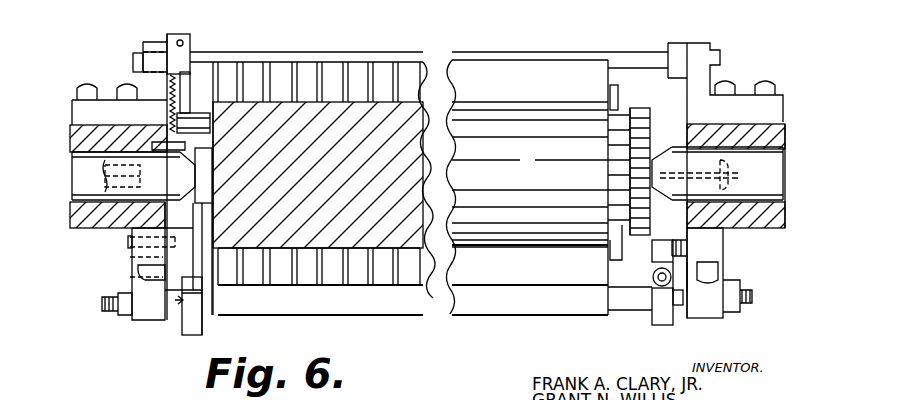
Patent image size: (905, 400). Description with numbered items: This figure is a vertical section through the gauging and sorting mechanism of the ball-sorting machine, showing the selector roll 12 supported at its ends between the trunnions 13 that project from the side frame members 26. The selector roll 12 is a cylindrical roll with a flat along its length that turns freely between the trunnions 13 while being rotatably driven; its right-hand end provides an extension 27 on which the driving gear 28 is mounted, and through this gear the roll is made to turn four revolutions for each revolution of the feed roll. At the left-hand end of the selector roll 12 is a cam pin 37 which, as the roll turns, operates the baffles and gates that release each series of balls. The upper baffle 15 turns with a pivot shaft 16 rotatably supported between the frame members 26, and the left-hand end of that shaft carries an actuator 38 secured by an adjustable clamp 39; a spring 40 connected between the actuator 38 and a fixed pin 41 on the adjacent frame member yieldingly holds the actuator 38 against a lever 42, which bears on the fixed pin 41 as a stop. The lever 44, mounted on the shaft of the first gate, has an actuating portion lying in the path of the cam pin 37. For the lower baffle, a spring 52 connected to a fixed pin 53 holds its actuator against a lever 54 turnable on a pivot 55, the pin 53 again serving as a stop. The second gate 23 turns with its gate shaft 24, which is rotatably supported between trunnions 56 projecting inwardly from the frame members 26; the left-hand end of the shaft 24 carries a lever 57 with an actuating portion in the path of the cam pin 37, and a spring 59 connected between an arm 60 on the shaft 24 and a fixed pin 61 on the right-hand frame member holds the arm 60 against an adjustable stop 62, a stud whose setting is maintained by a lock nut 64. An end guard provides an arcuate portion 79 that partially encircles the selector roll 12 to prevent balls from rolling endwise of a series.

The selector roll 12 is at (367, 237).
The trunnions 13 is at (182, 175).
The baffle 15 is at (480, 75).
The pivot shaft 16 is at (318, 58).
The second gate 23 is at (490, 270).
The gate shaft 24 is at (207, 317).
The side frame members 26 is at (790, 222).
The extension 27 is at (626, 247).
The driving gear 28 is at (637, 115).
The cam pin 37 is at (195, 120).
The actuator 38 is at (185, 83).
The adjustable clamp 39 is at (170, 40).
The spring 40 is at (170, 108).
The fixed pin 41 is at (167, 147).
The lever 42 is at (185, 100).
The lever 44 is at (238, 110).
The spring 52 is at (163, 250).
The fixed pin 53 is at (175, 240).
The lever 54 is at (185, 252).
The pivot 55 is at (137, 252).
The trunnions 56 is at (173, 312).
The lever 57 is at (193, 323).
The spring 59 is at (683, 233).
The arm 60 is at (695, 280).
The fixed pin 61 is at (690, 248).
The adjustable stop 62 is at (657, 287).
The lock nut 64 is at (655, 282).
The arcuate portion 79 is at (617, 90).